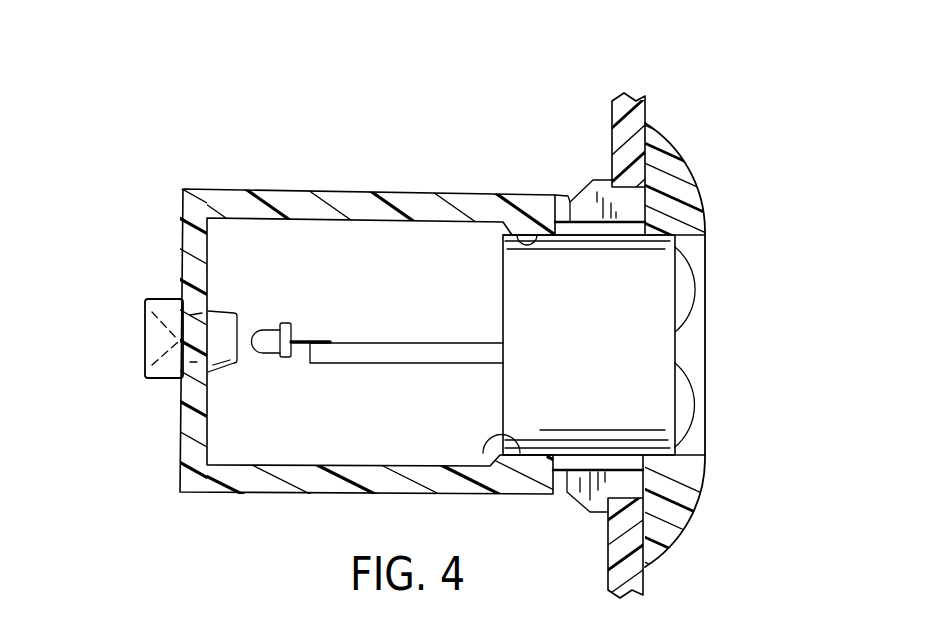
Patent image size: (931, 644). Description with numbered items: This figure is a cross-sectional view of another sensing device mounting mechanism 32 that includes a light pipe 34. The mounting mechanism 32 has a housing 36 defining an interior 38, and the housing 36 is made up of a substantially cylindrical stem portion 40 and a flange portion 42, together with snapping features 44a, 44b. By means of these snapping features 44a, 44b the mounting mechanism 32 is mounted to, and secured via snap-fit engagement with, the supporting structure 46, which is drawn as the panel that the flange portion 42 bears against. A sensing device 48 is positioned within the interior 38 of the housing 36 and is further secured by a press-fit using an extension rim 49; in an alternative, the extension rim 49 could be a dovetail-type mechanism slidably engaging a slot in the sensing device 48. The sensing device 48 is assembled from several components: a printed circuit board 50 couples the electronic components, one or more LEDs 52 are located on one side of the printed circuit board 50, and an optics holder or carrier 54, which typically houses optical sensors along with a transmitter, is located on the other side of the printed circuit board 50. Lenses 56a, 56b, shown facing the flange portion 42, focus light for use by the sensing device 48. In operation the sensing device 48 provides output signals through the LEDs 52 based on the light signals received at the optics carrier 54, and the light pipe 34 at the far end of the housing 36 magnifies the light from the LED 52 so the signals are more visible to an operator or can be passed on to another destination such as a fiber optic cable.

The sensing device mounting mechanism 32 is at (191, 125).
The light pipe 34 is at (150, 297).
The housing 36 is at (407, 191).
The interior 38 is at (283, 270).
The substantially cylindrical stem portion 40 is at (302, 189).
The flange portion 42 is at (686, 157).
The snapping feature 44a is at (588, 190).
The snapping feature 44b is at (583, 500).
The supporting structure 46 is at (648, 103).
The sensing device 48 is at (432, 318).
The extension rim 49 is at (517, 235).
The printed circuit board 50 is at (380, 354).
The LED 52 is at (267, 347).
The optics holder or carrier 54 is at (585, 350).
The lens 56a is at (690, 292).
The lens 56b is at (703, 387).